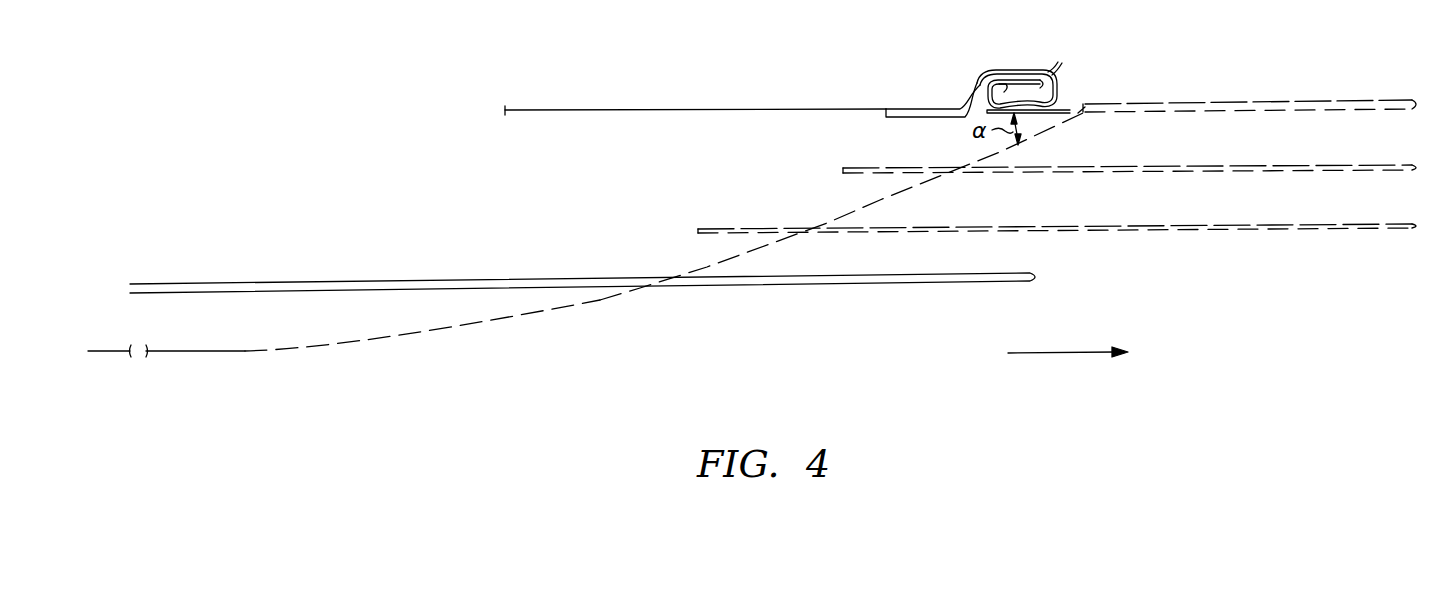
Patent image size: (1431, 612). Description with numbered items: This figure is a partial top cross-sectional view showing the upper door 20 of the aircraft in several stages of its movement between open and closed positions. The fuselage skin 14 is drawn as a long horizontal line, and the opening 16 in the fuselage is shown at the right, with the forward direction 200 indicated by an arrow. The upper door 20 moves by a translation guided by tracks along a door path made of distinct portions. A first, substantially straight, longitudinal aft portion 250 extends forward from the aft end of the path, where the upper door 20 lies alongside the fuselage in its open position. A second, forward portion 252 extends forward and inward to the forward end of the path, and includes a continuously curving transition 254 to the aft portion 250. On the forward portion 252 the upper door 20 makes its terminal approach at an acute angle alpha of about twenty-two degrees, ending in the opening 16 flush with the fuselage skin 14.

The skin 14 is at (692, 124).
The opening 16 is at (1255, 88).
The upper door 20 is at (1355, 103).
The forward direction 200 is at (1053, 354).
The aft portion of the door path 250 is at (106, 353).
The forward portion of the door path 252 is at (932, 184).
The continuously curving transition 254 is at (475, 328).